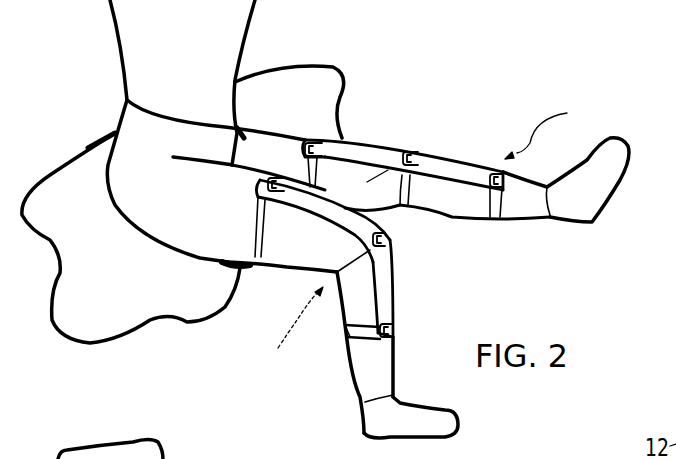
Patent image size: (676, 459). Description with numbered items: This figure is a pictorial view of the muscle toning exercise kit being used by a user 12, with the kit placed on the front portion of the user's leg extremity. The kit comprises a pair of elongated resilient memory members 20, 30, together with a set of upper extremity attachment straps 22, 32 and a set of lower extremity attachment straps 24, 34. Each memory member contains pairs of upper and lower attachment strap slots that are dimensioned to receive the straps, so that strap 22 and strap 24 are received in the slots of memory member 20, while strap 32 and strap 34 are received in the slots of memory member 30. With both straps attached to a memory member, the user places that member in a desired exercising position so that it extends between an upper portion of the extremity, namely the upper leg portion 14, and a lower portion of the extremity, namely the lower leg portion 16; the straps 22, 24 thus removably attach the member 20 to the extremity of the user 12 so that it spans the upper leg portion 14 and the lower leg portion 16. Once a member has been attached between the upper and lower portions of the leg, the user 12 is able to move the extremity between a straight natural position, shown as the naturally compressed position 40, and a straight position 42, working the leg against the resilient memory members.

The user 12 is at (133, 13).
The upper leg portion 14 is at (408, 151).
The lower leg portion 16 is at (453, 205).
The elongated resilient memory member 20 is at (451, 152).
The upper extremity attachment strap 22 is at (337, 147).
The lower extremity attachment strap 24 is at (490, 197).
The elongated resilient memory member 30 is at (388, 278).
The upper extremity attachment strap 32 is at (287, 262).
The lower extremity attachment strap 34 is at (347, 338).
The naturally compressed position 40 is at (548, 129).
The straight position 42 is at (284, 325).